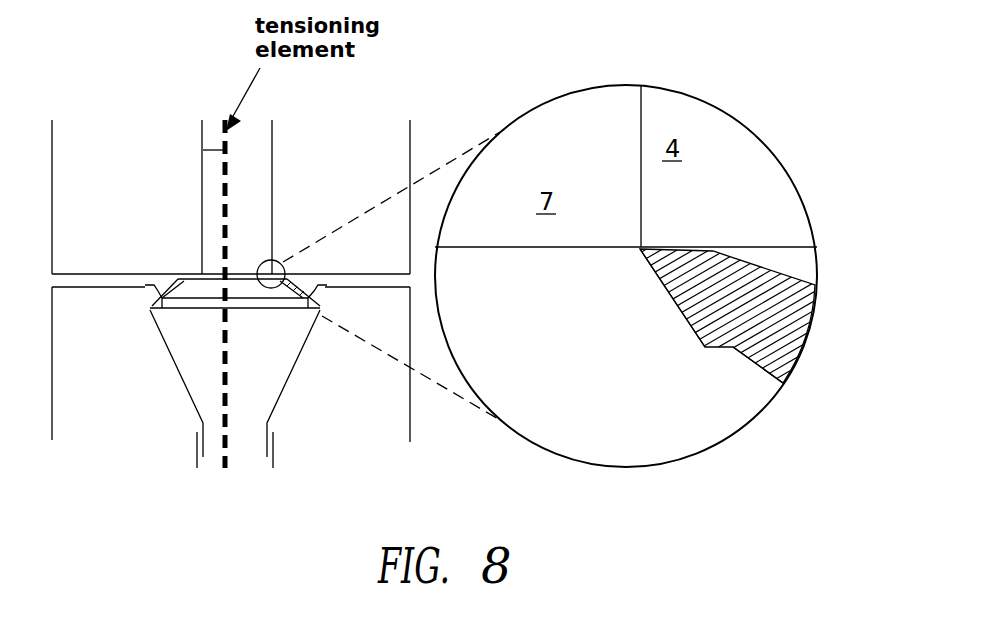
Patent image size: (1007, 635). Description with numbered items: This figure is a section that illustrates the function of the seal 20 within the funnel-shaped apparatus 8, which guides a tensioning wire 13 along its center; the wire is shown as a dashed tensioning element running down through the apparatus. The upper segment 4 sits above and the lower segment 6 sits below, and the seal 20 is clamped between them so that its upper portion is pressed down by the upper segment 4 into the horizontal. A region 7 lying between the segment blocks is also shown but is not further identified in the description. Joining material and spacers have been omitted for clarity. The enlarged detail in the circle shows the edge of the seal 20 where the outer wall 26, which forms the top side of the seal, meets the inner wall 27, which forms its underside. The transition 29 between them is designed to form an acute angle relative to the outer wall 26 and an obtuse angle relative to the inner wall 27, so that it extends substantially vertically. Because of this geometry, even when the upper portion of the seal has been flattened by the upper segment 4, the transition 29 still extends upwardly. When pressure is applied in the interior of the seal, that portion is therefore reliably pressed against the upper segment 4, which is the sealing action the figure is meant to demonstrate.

The upper segment 4 is at (116, 206).
The receiving bore 7 is at (257, 201).
The funnel-shaped apparatus 8 is at (258, 388).
The segment 6 is at (353, 458).
The tensioning wire 13 is at (203, 151).
The seal 20 is at (138, 303).
The outer wall 26 is at (749, 250).
The inner wall 27 is at (732, 372).
The transition 29 is at (650, 311).